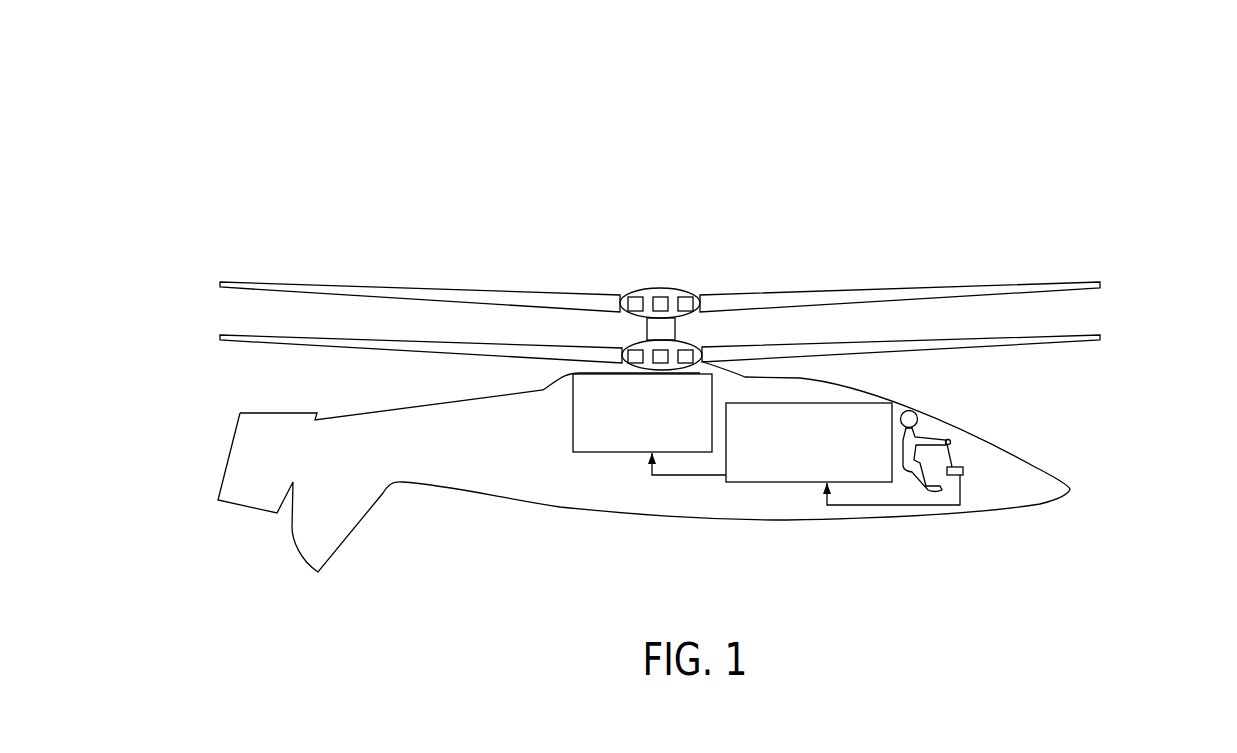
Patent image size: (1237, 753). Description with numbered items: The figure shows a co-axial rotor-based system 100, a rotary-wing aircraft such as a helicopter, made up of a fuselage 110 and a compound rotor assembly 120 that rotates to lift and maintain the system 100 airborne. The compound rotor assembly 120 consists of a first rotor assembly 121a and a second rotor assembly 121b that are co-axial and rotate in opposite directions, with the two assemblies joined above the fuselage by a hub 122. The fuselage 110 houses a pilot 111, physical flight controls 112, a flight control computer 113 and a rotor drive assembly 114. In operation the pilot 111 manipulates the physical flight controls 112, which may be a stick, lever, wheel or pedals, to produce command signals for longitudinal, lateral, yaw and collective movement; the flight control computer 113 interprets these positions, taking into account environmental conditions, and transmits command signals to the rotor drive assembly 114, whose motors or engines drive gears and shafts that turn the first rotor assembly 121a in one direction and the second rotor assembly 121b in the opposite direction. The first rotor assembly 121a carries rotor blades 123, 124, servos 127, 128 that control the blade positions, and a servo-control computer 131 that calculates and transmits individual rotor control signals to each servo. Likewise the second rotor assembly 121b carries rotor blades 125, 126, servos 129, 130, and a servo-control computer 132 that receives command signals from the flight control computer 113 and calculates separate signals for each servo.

The co-axial rotor-based system 100 is at (1087, 117).
The fuselage 110 is at (1032, 505).
The pilot 111 is at (927, 413).
The physical flight controls 112 is at (960, 457).
The flight control computer 113 is at (790, 482).
The rotor drive assembly 114 is at (597, 453).
The compound rotor assembly 120 is at (1128, 308).
The first rotor assembly 121a is at (1064, 282).
The second rotor assembly 121b is at (1082, 326).
The upper rotor hub 122 is at (700, 318).
The rotor blade 123 is at (279, 285).
The rotor blade 124 is at (832, 292).
The rotor blade 125 is at (373, 338).
The rotor blade 126 is at (882, 342).
The servo 127 is at (633, 296).
The servo 128 is at (685, 296).
The servo 129 is at (623, 345).
The servo 130 is at (675, 330).
The servo-control computer 131 is at (658, 296).
The servo-control computer 132 is at (637, 342).